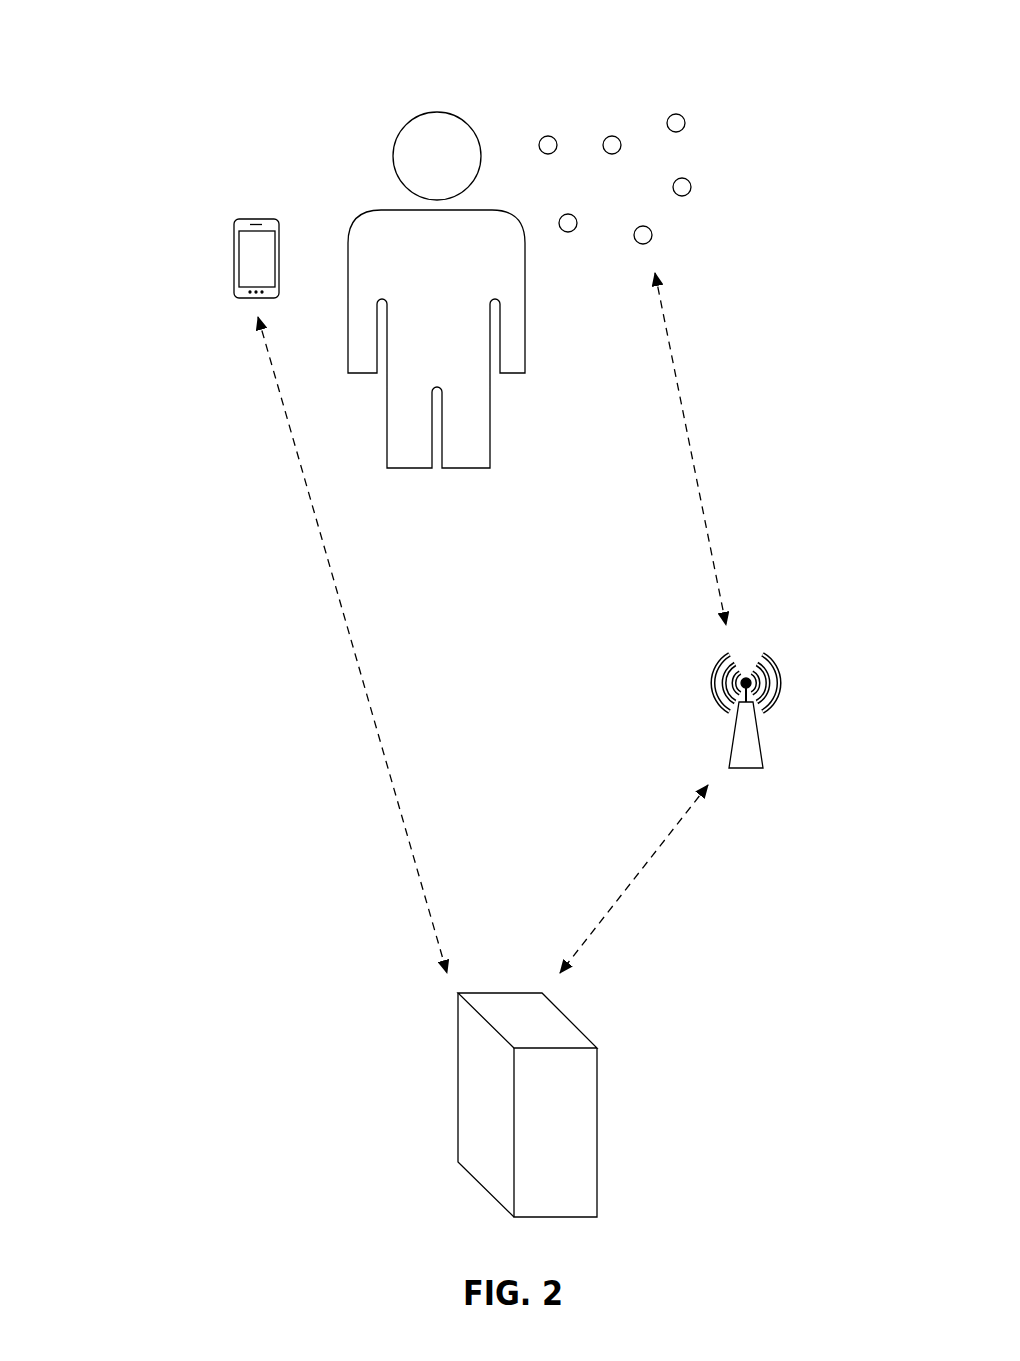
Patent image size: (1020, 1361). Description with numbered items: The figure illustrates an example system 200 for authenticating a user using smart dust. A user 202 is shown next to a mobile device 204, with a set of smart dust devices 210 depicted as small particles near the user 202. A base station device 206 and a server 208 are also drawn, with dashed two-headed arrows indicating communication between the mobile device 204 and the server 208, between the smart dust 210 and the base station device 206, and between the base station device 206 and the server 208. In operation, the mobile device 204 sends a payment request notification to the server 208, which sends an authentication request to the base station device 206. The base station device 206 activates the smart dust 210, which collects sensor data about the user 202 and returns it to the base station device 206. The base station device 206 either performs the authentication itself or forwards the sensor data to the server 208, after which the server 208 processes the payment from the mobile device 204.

The system 200 is at (168, 43).
The user 202 is at (393, 152).
The mobile device 204 is at (227, 213).
The base station device 206 is at (705, 668).
The server 208 is at (428, 992).
The smart dust devices 210 is at (610, 125).